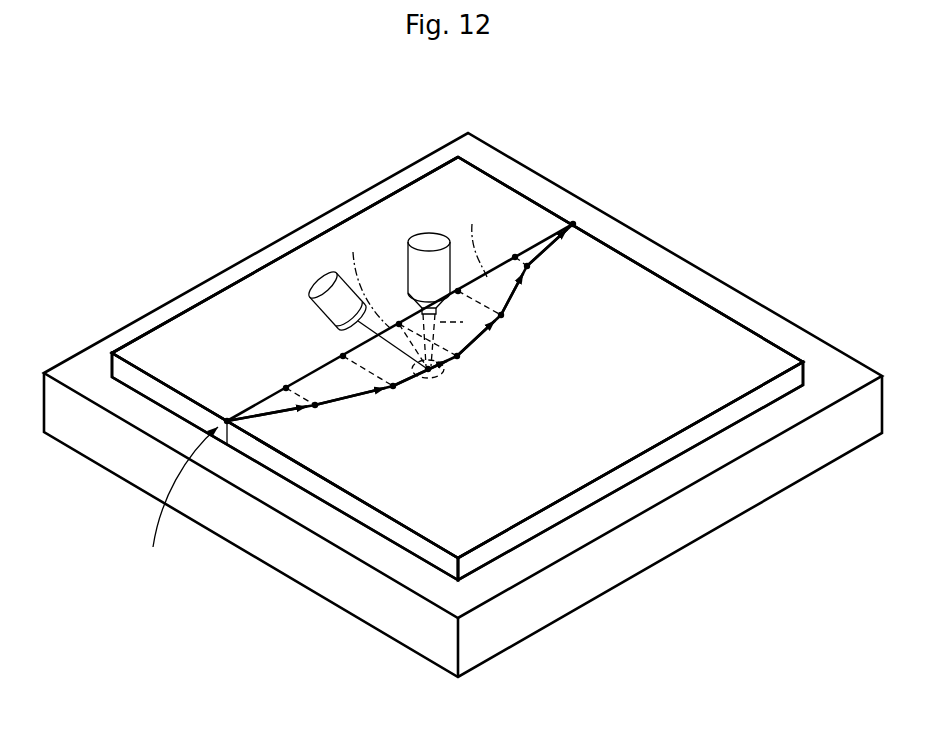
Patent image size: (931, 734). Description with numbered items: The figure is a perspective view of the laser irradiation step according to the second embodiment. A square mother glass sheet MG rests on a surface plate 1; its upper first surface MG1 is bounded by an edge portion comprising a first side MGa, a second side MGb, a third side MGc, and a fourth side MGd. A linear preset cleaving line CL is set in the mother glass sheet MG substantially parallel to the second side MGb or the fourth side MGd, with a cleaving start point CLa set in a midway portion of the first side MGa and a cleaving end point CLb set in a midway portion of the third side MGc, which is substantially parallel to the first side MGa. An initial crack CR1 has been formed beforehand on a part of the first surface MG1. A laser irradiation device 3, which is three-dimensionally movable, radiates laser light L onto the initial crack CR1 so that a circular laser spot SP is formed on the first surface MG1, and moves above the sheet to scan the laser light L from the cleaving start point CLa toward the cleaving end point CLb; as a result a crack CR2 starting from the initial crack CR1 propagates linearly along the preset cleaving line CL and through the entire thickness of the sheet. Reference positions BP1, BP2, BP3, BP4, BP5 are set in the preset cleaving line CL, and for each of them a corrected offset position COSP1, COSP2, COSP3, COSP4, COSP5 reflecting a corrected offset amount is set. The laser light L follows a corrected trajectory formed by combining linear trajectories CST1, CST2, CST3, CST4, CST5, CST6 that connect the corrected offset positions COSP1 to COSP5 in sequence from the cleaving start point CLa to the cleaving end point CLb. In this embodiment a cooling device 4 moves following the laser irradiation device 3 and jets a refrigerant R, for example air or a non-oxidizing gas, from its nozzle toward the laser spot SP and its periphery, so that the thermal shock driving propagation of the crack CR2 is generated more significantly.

The surface plate 1 is at (722, 496).
The laser irradiation device 3 is at (428, 240).
The cooling device 4 is at (322, 282).
The mother glass sheet MG is at (700, 298).
The first surface MG1 is at (233, 318).
The first side MGa is at (193, 406).
The second side MGb is at (563, 500).
The third side MGc is at (505, 178).
The fourth side MGd is at (183, 308).
The reference position BP1 is at (285, 388).
The reference position BP2 is at (343, 355).
The reference position BP3 is at (400, 323).
The reference position BP4 is at (457, 290).
The reference position BP5 is at (515, 257).
The corrected offset position COSP1 is at (315, 407).
The corrected offset position COSP2 is at (393, 390).
The corrected offset position COSP3 is at (460, 358).
The corrected offset position COSP4 is at (504, 318).
The corrected offset position COSP5 is at (531, 268).
The linear trajectory CST1 is at (283, 413).
The linear trajectory CST2 is at (353, 397).
The linear trajectory CST3 is at (443, 362).
The linear trajectory CST4 is at (480, 337).
The linear trajectory CST5 is at (516, 291).
The linear trajectory CST6 is at (548, 246).
The initial crack CR1 is at (173, 506).
The crack CR2 is at (316, 370).
The cleaving start point CLa is at (227, 444).
The cleaving end point CLb is at (573, 223).
The preset cleaving line CL is at (471, 238).
The laser light L is at (459, 323).
The refrigerant R is at (368, 278).
The laser spot SP is at (442, 372).